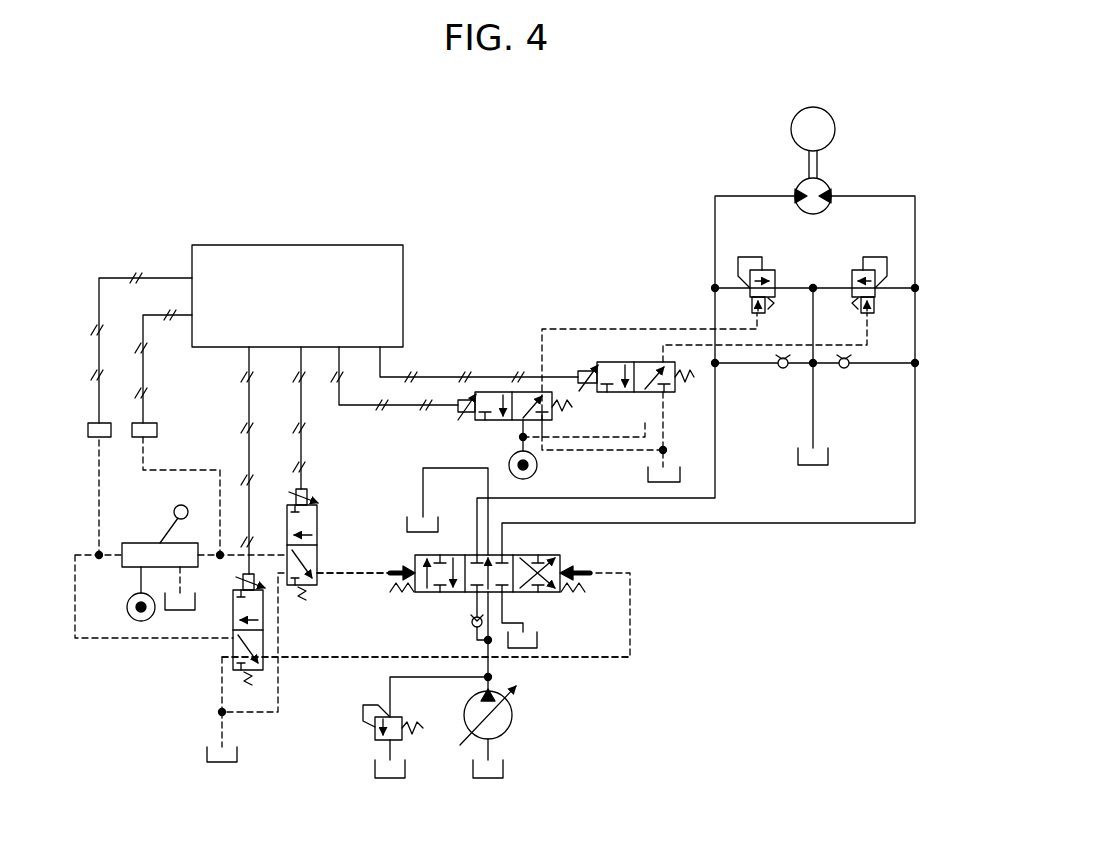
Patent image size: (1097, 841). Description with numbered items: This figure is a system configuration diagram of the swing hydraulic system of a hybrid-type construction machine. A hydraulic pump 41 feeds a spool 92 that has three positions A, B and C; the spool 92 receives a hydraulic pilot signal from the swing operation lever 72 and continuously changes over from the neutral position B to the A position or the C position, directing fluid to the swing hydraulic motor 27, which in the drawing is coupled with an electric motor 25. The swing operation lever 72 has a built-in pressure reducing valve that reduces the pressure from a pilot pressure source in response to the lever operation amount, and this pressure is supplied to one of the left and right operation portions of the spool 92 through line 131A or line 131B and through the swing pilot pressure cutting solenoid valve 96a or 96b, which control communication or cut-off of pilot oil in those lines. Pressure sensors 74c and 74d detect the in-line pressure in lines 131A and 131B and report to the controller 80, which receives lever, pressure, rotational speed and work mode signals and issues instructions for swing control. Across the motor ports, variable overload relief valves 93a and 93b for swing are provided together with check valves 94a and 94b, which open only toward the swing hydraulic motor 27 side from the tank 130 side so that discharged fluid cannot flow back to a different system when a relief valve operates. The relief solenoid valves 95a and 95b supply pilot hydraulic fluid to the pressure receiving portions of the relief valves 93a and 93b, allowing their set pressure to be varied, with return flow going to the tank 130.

The controller 80 is at (382, 245).
The pressure sensor 74c is at (105, 438).
The pressure sensor 74d is at (152, 423).
The swing operation lever 72 is at (130, 567).
The swing pilot pressure cutting solenoid valve 96a is at (317, 521).
The swing pilot pressure cutting solenoid valve 96b is at (235, 647).
The line 131A is at (347, 573).
The line 131B is at (323, 657).
The spool 92 is at (560, 562).
The tank 130 is at (535, 642).
The hydraulic pump 41 is at (512, 728).
The relief solenoid valve 95a is at (489, 392).
The relief solenoid valve 95b is at (617, 362).
The electric motor 25 is at (793, 128).
The swing hydraulic motor 27 is at (798, 184).
The variable overload relief valve for swing 93a is at (762, 270).
The variable overload relief valve for swing 93b is at (857, 270).
The check valve for swing 94a is at (783, 369).
The check valve for swing 94b is at (845, 369).